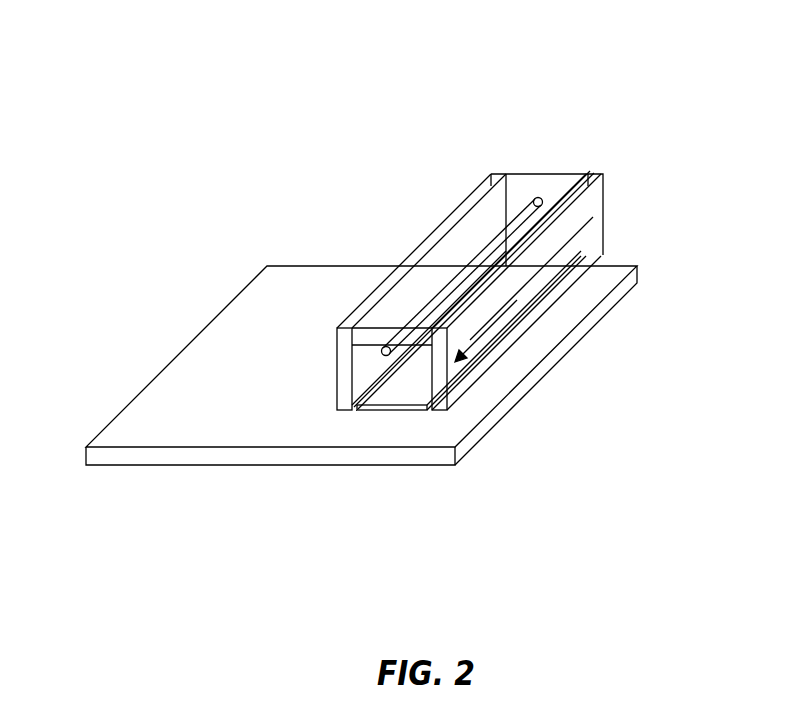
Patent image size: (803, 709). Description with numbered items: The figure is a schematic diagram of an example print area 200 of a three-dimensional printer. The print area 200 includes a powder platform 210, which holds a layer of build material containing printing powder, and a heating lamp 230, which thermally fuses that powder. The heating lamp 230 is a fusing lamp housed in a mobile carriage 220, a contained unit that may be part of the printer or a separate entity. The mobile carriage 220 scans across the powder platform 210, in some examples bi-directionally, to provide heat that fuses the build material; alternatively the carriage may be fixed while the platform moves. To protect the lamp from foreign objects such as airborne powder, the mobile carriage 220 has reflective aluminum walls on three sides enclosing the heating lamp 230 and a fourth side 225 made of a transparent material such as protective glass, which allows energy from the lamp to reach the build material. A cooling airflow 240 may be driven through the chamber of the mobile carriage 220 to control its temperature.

The print area 200 is at (134, 93).
The powder platform 210 is at (490, 428).
The mobile carriage 220 is at (598, 188).
The fourth side 225 is at (523, 240).
The heating lamp 230 is at (543, 200).
The cooling airflow 240 is at (517, 300).